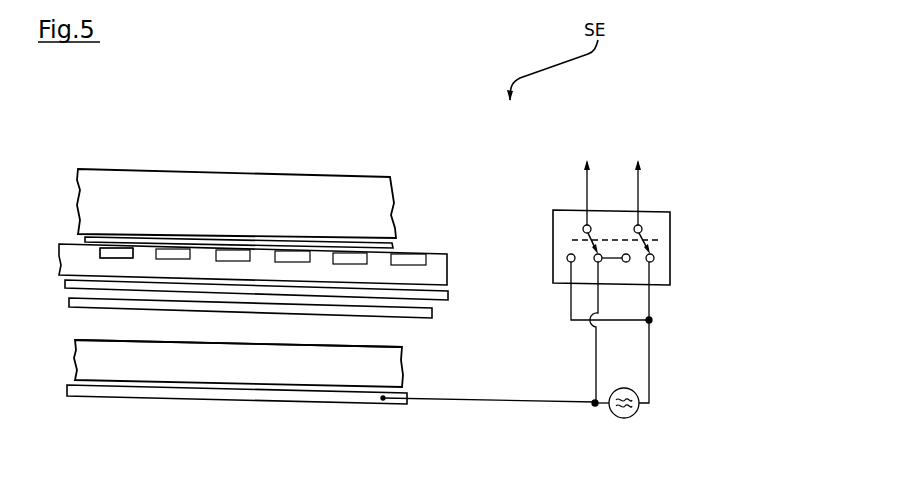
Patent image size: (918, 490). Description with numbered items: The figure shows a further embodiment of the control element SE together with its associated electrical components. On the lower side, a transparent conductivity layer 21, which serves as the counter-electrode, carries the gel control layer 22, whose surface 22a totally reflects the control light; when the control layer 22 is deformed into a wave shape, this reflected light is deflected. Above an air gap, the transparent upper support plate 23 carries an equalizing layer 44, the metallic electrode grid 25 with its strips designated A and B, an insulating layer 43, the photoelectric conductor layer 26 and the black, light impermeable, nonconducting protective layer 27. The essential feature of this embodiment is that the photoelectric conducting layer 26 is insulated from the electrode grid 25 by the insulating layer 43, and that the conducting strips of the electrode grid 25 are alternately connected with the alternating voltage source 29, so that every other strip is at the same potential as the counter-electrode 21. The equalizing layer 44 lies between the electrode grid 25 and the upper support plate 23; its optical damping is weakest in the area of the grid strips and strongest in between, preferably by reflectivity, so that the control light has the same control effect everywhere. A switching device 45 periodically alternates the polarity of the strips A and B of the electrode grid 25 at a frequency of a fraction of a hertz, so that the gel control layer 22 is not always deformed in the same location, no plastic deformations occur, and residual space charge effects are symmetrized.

The conductivity layer 21 is at (66, 392).
The control layer 22 is at (392, 372).
The surface of control layer 22a is at (190, 342).
The upper support plate 23 is at (297, 184).
The electrode grid 25 is at (100, 250).
The photoelectric conductor layer 26 is at (80, 288).
The protective layer 27 is at (424, 316).
The power source of alternating voltage 29 is at (618, 418).
The insulating layer 43 is at (432, 282).
The equalizing layer 44 is at (398, 240).
The switching device 45 is at (562, 225).